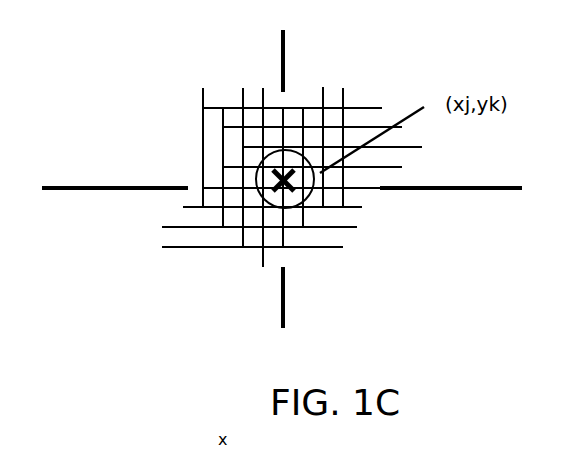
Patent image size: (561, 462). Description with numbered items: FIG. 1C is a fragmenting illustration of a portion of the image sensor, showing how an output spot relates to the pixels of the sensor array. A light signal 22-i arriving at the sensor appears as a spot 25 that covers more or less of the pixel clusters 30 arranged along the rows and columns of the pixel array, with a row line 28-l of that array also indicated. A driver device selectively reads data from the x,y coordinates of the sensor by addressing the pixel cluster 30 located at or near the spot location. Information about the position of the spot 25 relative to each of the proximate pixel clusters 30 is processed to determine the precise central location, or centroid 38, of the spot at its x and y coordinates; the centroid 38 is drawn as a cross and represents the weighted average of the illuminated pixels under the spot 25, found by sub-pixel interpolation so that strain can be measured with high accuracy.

The light signal 22-i is at (282, 68).
The horizontal axis line (x-axis) of sensor array 28-l is at (128, 189).
The spot 25 is at (268, 182).
The pixel cluster 30 is at (311, 139).
The centroid 38 is at (304, 206).